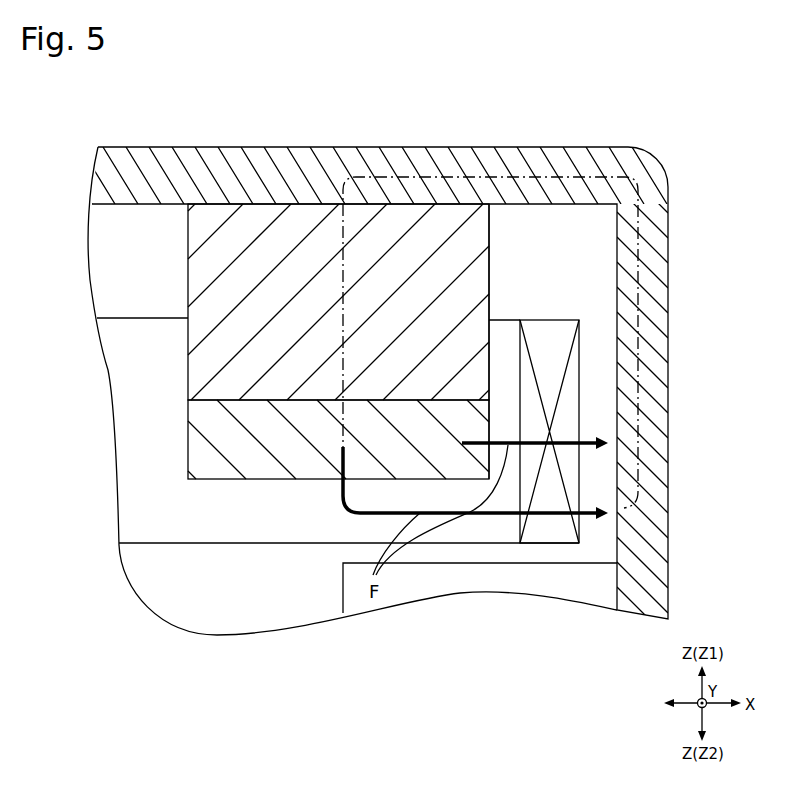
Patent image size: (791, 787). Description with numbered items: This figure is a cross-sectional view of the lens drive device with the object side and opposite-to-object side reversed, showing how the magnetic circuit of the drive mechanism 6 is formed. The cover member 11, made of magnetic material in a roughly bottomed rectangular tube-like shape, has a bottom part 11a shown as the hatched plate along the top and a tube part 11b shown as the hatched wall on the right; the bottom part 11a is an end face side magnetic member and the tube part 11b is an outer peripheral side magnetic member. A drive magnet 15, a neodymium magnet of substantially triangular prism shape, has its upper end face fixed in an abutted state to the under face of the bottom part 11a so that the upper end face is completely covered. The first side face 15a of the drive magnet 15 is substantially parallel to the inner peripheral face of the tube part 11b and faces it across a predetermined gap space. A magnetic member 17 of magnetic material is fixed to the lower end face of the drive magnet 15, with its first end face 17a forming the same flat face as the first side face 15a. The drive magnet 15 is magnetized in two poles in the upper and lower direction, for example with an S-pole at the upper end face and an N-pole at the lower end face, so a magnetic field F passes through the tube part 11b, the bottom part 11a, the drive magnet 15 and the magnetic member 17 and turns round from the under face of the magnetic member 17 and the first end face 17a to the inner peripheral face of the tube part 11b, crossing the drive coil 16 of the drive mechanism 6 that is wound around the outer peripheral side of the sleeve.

The cover member 11 is at (385, 381).
The bottom part 11a is at (490, 342).
The tube part 11b is at (668, 236).
The drive mechanism 6 is at (600, 287).
The drive magnet 15 is at (188, 275).
The first side face 15a is at (489, 240).
The drive coil 16 is at (579, 365).
The magnetic member 17 is at (188, 440).
The first end face 17a is at (489, 417).